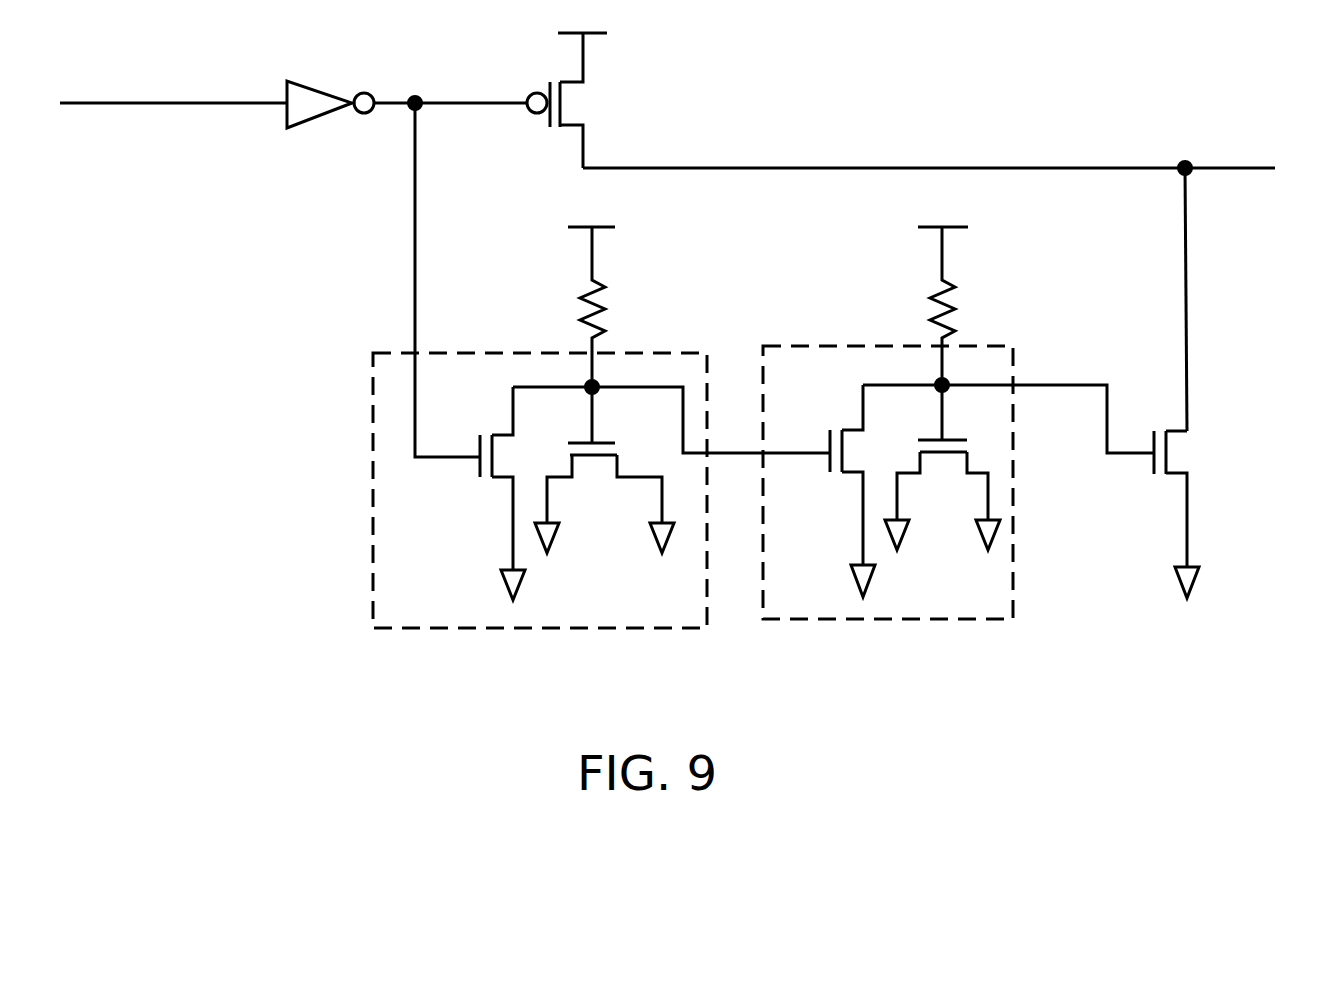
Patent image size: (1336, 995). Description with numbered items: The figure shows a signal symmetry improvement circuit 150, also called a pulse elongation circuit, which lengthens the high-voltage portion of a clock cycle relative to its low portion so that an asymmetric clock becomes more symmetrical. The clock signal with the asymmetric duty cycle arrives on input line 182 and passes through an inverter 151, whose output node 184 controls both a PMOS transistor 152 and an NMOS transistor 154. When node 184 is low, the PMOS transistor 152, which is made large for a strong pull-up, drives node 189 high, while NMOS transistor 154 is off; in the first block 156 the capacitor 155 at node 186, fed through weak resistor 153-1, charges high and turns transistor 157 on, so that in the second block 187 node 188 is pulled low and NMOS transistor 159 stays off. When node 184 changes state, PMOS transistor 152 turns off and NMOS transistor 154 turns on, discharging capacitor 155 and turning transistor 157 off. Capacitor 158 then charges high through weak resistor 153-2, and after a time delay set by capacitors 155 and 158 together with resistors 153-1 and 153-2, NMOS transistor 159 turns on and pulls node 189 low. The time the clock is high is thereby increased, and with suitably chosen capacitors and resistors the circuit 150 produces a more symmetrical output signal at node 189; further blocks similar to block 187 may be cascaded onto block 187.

The signal symmetry improvement circuit 150 is at (686, 472).
The inverter 151 is at (286, 128).
The PMOS transistor 152 is at (585, 124).
The weak resistor 153-1 is at (605, 298).
The weak resistor 153-2 is at (953, 296).
The NMOS transistor 154 is at (480, 470).
The capacitor 155 is at (583, 473).
The circuit block 156 is at (644, 546).
The transistor 157 is at (830, 474).
The capacitor 158 is at (937, 465).
The NMOS transistor 159 is at (1187, 474).
The input line 182 is at (147, 103).
The node 184 is at (420, 100).
The node 186 is at (592, 387).
The circuit block 187 is at (959, 546).
The node 188 is at (942, 385).
The node 189 is at (1190, 172).